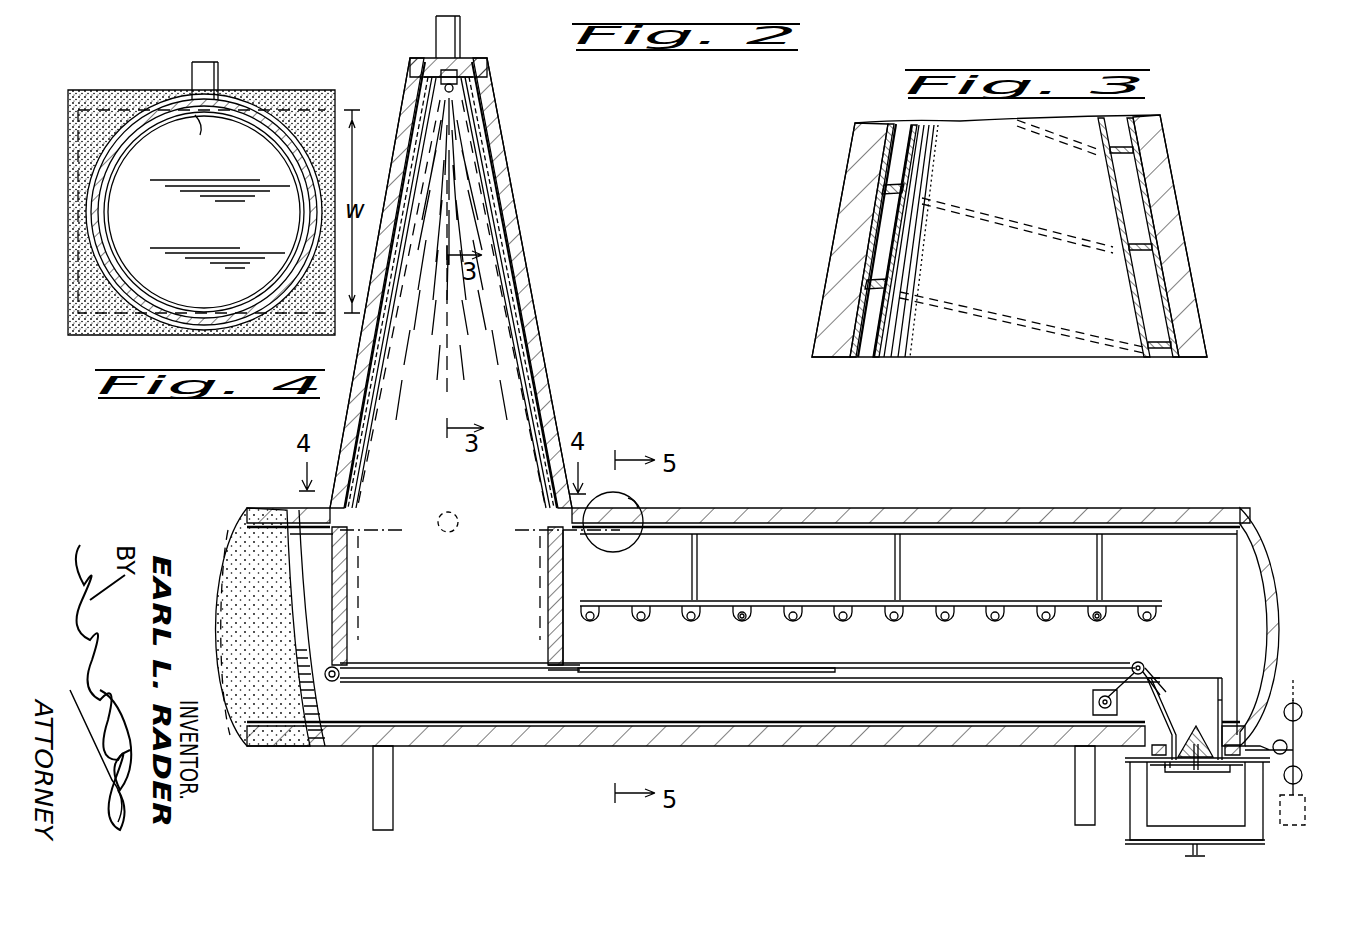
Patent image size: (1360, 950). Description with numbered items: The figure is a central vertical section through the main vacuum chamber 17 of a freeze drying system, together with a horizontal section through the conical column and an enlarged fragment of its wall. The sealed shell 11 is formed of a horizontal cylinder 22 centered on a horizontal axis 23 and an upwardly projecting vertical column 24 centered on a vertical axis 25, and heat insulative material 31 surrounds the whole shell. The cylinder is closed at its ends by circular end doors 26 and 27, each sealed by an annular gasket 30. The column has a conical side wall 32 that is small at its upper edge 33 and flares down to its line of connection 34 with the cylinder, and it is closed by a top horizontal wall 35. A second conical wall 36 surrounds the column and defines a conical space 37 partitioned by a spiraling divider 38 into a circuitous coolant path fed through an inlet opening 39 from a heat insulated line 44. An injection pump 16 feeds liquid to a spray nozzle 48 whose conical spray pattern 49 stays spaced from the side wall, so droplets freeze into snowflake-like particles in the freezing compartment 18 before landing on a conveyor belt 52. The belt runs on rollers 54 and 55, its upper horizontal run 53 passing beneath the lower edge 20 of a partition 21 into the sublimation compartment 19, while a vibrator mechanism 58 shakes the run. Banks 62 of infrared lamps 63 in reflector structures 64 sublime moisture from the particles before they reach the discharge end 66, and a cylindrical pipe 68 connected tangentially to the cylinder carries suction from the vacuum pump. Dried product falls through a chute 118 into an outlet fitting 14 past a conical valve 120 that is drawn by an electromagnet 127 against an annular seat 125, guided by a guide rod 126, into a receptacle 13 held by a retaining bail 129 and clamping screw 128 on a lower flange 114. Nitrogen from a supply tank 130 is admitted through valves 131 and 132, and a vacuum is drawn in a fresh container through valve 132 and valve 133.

In FIG. 2, the shell 11 is at (1011, 509).
In FIG. 4, the shell 11 is at (321, 90).
In FIG. 2, the receptacle 13 is at (1136, 794).
In FIG. 2, the outlet fitting 14 is at (1192, 720).
In FIG. 2, the injection pump 16 is at (425, 37).
In FIG. 2, the vacuum chamber 17 is at (538, 441).
In FIG. 2, the freezing compartment 18 is at (509, 298).
In FIG. 2, the sublimation compartment 19 is at (768, 530).
In FIG. 2, the lower edge of partition 20 is at (556, 670).
In FIG. 2, the partition 21 is at (562, 592).
In FIG. 2, the horizontal cylinder 22 is at (840, 522).
In FIG. 2, the horizontal axis 23 is at (1310, 612).
In FIG. 2, the vertical column 24 is at (539, 339).
In FIG. 3, the vertical column 24 is at (1208, 296).
In FIG. 2, the vertical axis 25 is at (449, 380).
In FIG. 2, the end door 26 is at (238, 526).
In FIG. 2, the end door 27 is at (1222, 540).
In FIG. 2, the annular gasket 30 is at (1250, 516).
In FIG. 2, the heat insulative material 31 is at (920, 520).
In FIG. 3, the heat insulative material 31 is at (1175, 258).
In FIG. 4, the heat insulative material 31 is at (88, 120).
In FIG. 2, the conical side wall 32 is at (528, 394).
In FIG. 3, the conical side wall 32 is at (882, 358).
In FIG. 4, the conical side wall 32 is at (250, 118).
In FIG. 2, the upper edge 33 is at (460, 76).
In FIG. 2, the line of connection 34 is at (347, 542).
In FIG. 2, the top horizontal wall 35 is at (470, 66).
In FIG. 2, the second conical wall 36 is at (508, 198).
In FIG. 3, the second conical wall 36 is at (1165, 330).
In FIG. 4, the second conical wall 36 is at (288, 140).
In FIG. 2, the conical space 37 is at (500, 244).
In FIG. 3, the conical space 37 is at (1136, 215).
In FIG. 4, the conical space 37 is at (140, 306).
In FIG. 3, the spiraling divider 38 is at (870, 283).
In FIG. 4, the spiraling divider 38 is at (163, 114).
In FIG. 2, the inlet opening 39 is at (448, 534).
In FIG. 4, the inlet opening 39 is at (200, 118).
In FIG. 4, the heat insulated line 44 is at (212, 70).
In FIG. 2, the spray nozzle 48 is at (456, 86).
In FIG. 2, the conical spray pattern 49 is at (440, 176).
In FIG. 2, the conveyor belt 52 is at (482, 662).
In FIG. 4, the conveyor belt 52 is at (129, 87).
In FIG. 2, the upper horizontal run 53 is at (420, 662).
In FIG. 2, the roller 54 is at (340, 684).
In FIG. 2, the roller 55 is at (1150, 644).
In FIG. 2, the vibrator mechanism 58 is at (660, 673).
In FIG. 2, the bank of infrared lamps 62 is at (845, 602).
In FIG. 2, the infrared lamp 63 is at (795, 624).
In FIG. 2, the reflector structure 64 is at (742, 624).
In FIG. 2, the discharge end 66 is at (1078, 626).
In FIG. 2, the cylindrical pipe 68 is at (640, 505).
In FIG. 2, the lower flange 114 is at (1294, 754).
In FIG. 2, the chute 118 is at (1214, 700).
In FIG. 2, the valve 120 is at (1178, 775).
In FIG. 2, the annular seat 125 is at (1205, 760).
In FIG. 2, the guide rod 126 is at (1134, 841).
In FIG. 2, the electromagnet 127 is at (1150, 750).
In FIG. 2, the clamping screw 128 is at (1258, 836).
In FIG. 2, the retaining bail 129 is at (1150, 765).
In FIG. 2, the supply tank 130 is at (1300, 820).
In FIG. 2, the valve 131 is at (1302, 776).
In FIG. 2, the valve 132 is at (1286, 745).
In FIG. 2, the valve 133 is at (1302, 710).